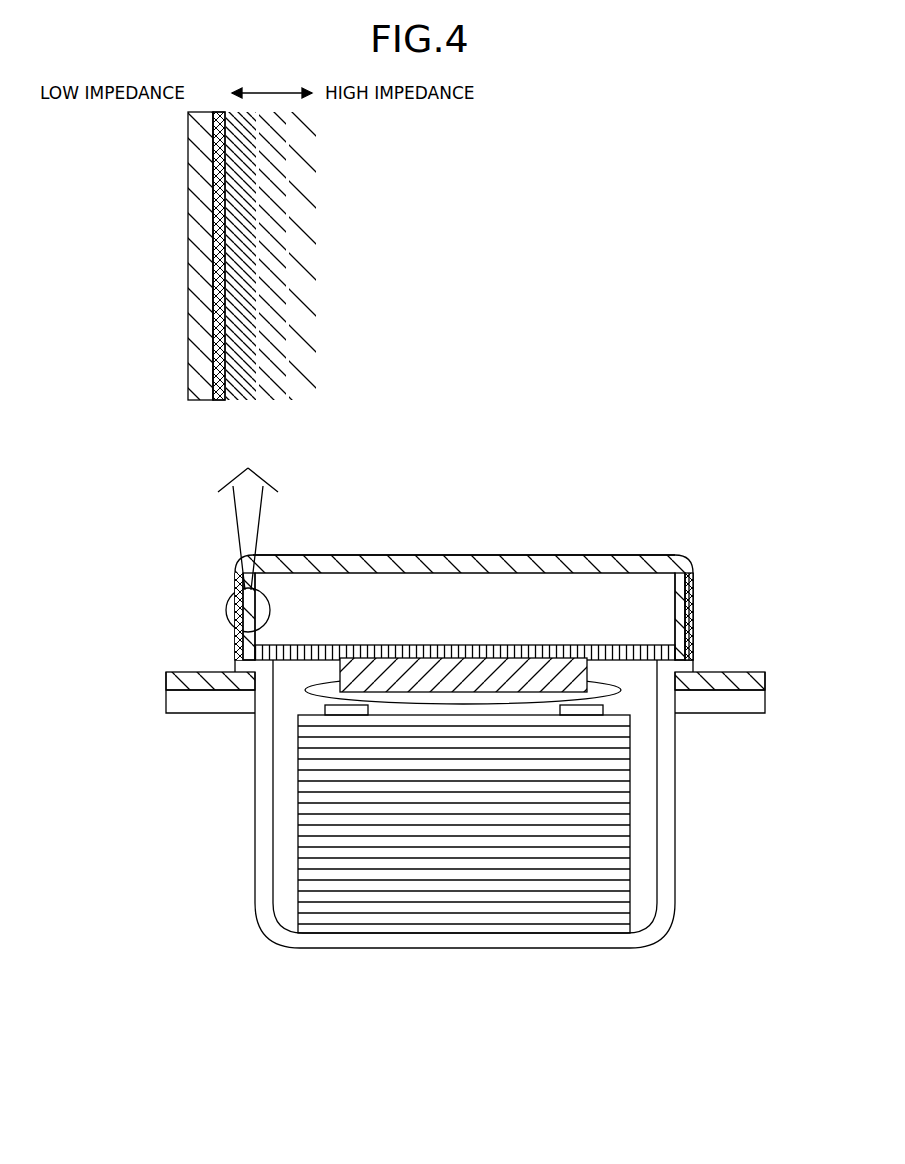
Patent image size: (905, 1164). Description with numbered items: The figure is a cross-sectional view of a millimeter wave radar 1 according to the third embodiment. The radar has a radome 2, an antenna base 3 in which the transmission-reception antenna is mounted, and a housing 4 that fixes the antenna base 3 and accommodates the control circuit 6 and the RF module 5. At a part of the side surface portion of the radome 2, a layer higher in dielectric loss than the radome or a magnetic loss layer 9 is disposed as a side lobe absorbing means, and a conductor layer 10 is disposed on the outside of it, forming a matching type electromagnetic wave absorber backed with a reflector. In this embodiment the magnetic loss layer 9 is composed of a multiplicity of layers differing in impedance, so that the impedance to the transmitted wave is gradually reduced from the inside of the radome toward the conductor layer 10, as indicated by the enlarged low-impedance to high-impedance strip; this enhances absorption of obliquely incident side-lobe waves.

The capacitor 1 is at (153, 544).
The radome 2 is at (364, 556).
The antenna base 3 is at (582, 648).
The housing 4 is at (668, 808).
The RF module 5 is at (514, 658).
The control circuit 6 is at (472, 905).
The magnetic loss layer 9 is at (316, 404).
The conductor layer 10 is at (220, 402).